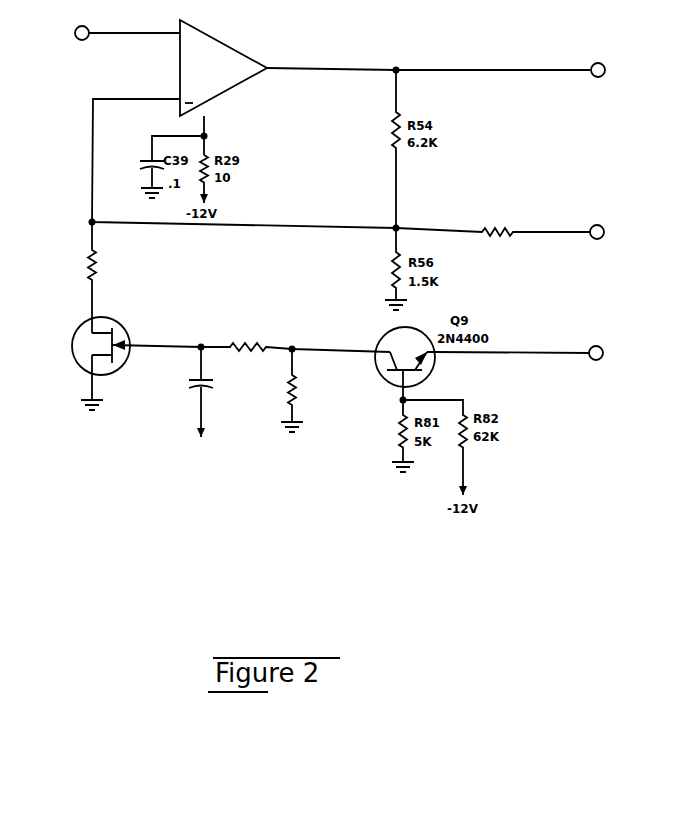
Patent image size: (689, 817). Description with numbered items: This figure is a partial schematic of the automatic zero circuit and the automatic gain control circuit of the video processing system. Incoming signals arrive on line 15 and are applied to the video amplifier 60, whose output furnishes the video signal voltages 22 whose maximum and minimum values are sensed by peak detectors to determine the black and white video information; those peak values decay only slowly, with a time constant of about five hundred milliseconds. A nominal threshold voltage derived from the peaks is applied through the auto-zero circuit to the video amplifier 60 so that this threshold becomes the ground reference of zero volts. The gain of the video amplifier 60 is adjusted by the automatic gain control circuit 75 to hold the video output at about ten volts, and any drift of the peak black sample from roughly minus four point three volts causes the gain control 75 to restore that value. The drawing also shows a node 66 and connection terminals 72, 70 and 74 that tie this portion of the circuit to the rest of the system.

The line 15 is at (104, 32).
The video amplifier 60 is at (222, 40).
The video signal voltages 22 is at (394, 72).
The output terminal E-E 72 is at (499, 70).
The feedback node 66 is at (92, 222).
The output terminal D-D 70 is at (539, 231).
The automatic gain control circuit 75 is at (300, 296).
The control terminal C-C 74 is at (519, 352).